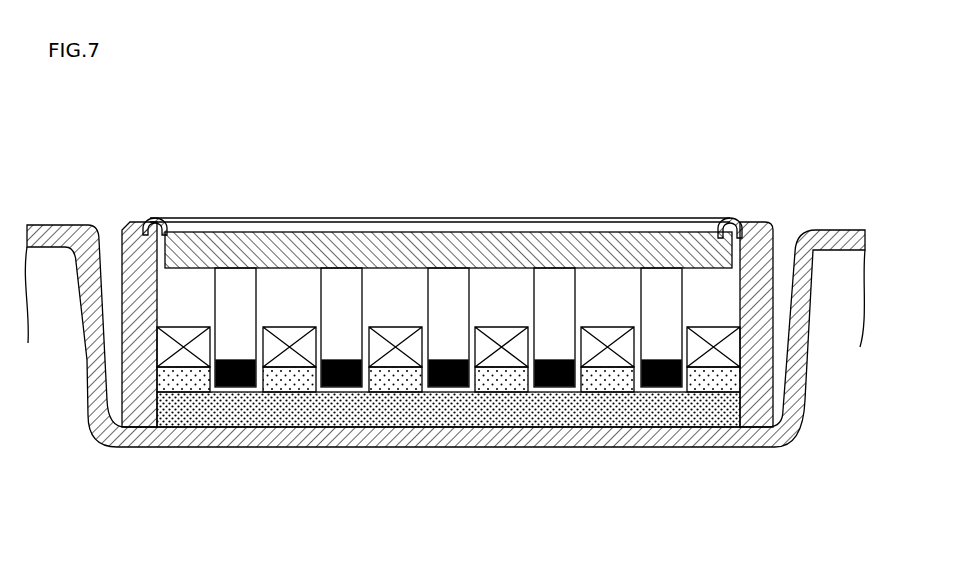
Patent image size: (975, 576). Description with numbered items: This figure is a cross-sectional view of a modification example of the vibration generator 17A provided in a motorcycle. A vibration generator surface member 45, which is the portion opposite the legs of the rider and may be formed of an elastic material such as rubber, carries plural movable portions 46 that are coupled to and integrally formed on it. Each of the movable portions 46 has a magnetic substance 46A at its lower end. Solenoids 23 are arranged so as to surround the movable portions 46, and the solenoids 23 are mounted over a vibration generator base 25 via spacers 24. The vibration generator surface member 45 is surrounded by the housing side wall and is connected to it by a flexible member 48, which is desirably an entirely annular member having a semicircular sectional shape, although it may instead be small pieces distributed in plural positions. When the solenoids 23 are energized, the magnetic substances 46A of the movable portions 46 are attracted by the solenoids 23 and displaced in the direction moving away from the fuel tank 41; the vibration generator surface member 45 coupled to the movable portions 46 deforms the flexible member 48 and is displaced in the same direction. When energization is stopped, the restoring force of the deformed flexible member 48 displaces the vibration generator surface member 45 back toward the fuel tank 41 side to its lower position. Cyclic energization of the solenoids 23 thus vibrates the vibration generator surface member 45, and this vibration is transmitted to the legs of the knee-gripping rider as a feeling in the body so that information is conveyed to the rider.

The vibration generator 17A is at (514, 187).
The fuel tank 41 is at (74, 225).
The flexible member 48 is at (287, 224).
The vibration generator surface member 45 is at (396, 238).
The movable portions 46 is at (233, 280).
The magnetic substances 46A is at (228, 385).
The solenoids 23 is at (174, 360).
The spacers 24 is at (202, 380).
The vibration generator base 25 is at (795, 442).